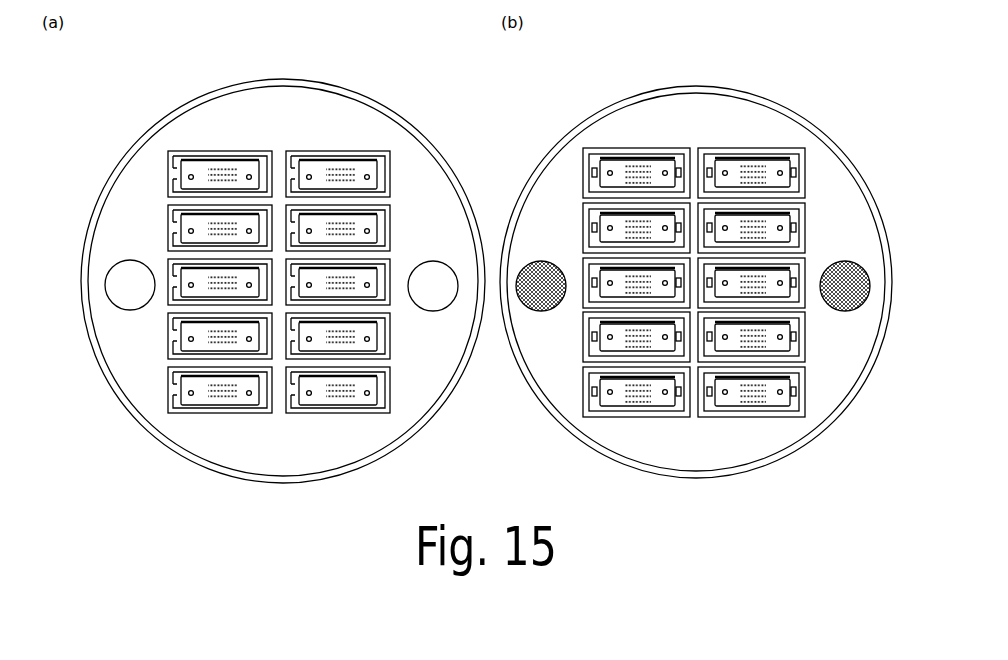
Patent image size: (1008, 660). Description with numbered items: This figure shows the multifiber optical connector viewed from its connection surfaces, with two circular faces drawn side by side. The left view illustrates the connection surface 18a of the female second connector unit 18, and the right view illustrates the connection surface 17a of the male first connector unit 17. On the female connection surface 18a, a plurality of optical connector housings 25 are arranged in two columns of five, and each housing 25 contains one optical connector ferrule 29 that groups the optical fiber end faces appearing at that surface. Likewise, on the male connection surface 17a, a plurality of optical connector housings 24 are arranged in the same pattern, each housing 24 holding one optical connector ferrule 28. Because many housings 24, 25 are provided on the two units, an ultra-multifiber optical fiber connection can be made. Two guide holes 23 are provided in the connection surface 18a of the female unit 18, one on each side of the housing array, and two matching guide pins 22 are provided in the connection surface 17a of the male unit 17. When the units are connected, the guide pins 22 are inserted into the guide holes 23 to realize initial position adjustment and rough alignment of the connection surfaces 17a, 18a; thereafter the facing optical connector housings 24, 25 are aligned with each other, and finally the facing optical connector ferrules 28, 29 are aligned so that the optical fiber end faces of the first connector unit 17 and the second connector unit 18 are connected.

The first connector unit 17 is at (751, 79).
The connection surface 17a is at (571, 376).
The second connector unit 18 is at (364, 77).
The connection surface 18a is at (430, 396).
The guide pin 22 is at (541, 311).
The guide hole 23 is at (130, 310).
The optical connector housing 24 is at (635, 149).
The optical connector housing 25 is at (212, 152).
The optical connector ferrule 28 is at (656, 158).
The optical connector ferrule 29 is at (232, 161).